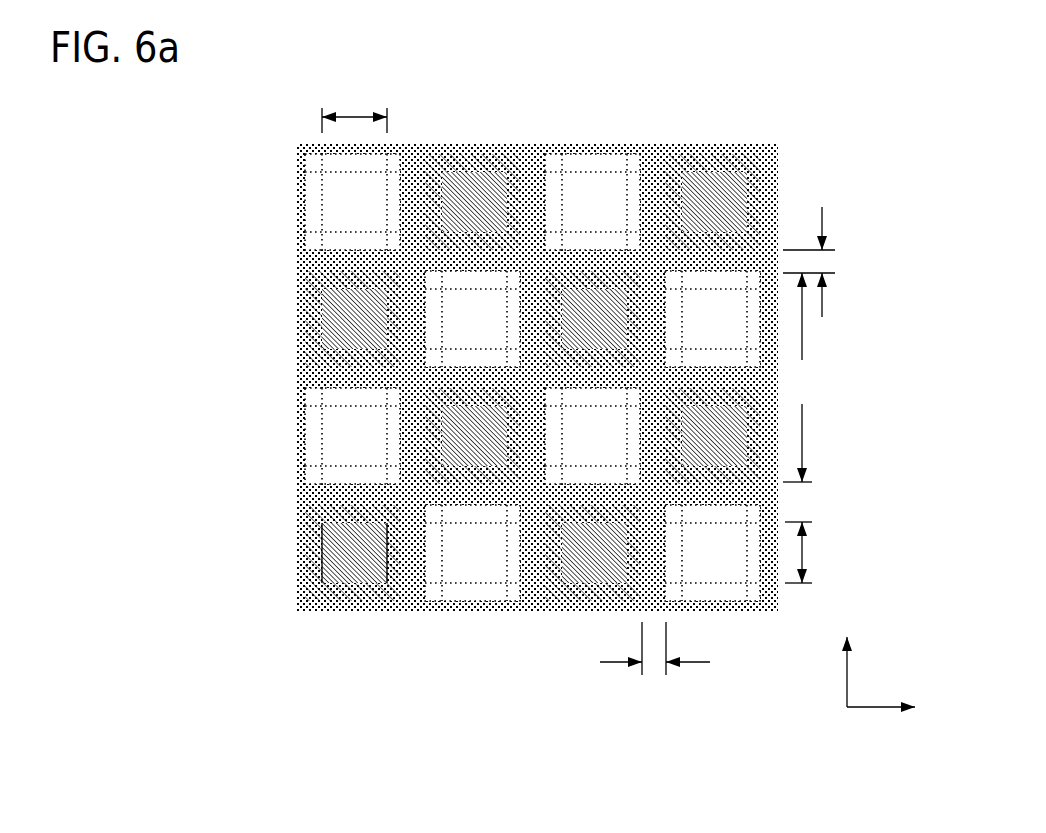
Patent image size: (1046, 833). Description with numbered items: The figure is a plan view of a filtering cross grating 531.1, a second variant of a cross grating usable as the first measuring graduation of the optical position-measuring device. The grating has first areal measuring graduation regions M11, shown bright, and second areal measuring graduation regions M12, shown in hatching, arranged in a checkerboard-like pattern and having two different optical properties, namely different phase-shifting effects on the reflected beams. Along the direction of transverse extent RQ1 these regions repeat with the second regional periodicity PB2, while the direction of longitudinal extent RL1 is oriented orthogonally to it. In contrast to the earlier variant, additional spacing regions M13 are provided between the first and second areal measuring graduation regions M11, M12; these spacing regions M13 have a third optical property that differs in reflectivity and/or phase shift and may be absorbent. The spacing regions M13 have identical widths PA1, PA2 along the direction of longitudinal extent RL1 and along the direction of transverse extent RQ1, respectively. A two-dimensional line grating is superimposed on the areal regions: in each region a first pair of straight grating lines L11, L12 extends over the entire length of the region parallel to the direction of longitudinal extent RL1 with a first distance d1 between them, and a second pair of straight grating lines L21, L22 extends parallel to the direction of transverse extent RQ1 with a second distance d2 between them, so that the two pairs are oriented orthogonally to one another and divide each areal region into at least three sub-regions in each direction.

The filtering cross grating 531.1 is at (166, 436).
The first areal measuring graduation region M11 is at (340, 202).
The second areal measuring graduation region M12 is at (333, 322).
The spacing region M13 is at (328, 377).
The first grating line of the first pair L11 is at (310, 523).
The second grating line of the first pair L12 is at (310, 583).
The first grating line of the second pair L21 is at (327, 600).
The second grating line of the second pair L22 is at (385, 600).
The first distance d1 is at (808, 553).
The second distance d2 is at (353, 115).
The width of spacing region along longitudinal direction PA1 is at (653, 665).
The width of spacing region along transverse direction PA2 is at (825, 262).
The second regional periodicity PB2 is at (802, 377).
The direction of transverse extent RQ1 is at (826, 662).
The direction of longitudinal extent RL1 is at (901, 712).